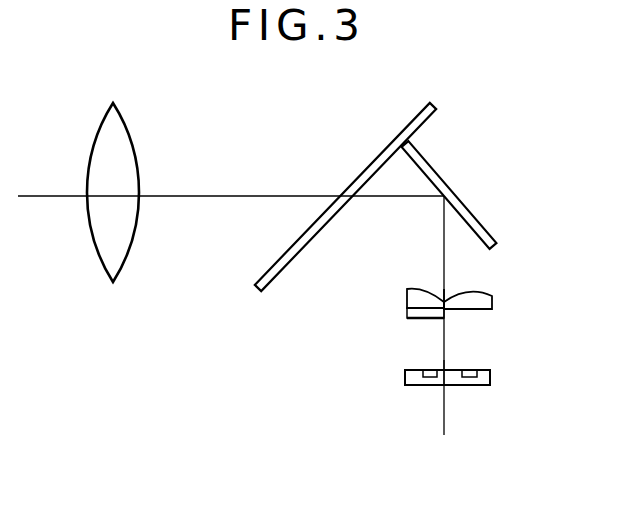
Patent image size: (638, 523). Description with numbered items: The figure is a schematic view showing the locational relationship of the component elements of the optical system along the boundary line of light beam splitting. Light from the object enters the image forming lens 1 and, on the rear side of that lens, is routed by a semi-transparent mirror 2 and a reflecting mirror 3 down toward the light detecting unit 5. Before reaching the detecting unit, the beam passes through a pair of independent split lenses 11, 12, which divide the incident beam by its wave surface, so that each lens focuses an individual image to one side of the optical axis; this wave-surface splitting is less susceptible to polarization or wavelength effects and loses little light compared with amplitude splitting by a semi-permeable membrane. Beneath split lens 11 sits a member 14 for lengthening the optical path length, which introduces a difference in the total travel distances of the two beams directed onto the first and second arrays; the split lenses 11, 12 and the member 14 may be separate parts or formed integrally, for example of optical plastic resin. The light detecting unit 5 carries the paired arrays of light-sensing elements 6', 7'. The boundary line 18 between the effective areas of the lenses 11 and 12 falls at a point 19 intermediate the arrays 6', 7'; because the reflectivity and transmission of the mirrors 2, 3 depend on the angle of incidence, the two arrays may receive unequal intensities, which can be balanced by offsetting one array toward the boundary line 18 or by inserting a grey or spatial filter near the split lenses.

The image forming lens 1 is at (133, 140).
The semi-transparent mirror 2 is at (381, 153).
The reflecting mirror 3 is at (442, 176).
The light detecting unit 5 is at (490, 378).
The light-sensing element array 6' is at (420, 401).
The light-sensing element array 7' is at (474, 401).
The split lens 11 is at (407, 298).
The split lens 12 is at (483, 303).
The member for lengthening the optical path length 14 is at (418, 318).
The boundary line 18 is at (445, 299).
The point intermediate the paired arrays 19 is at (452, 368).